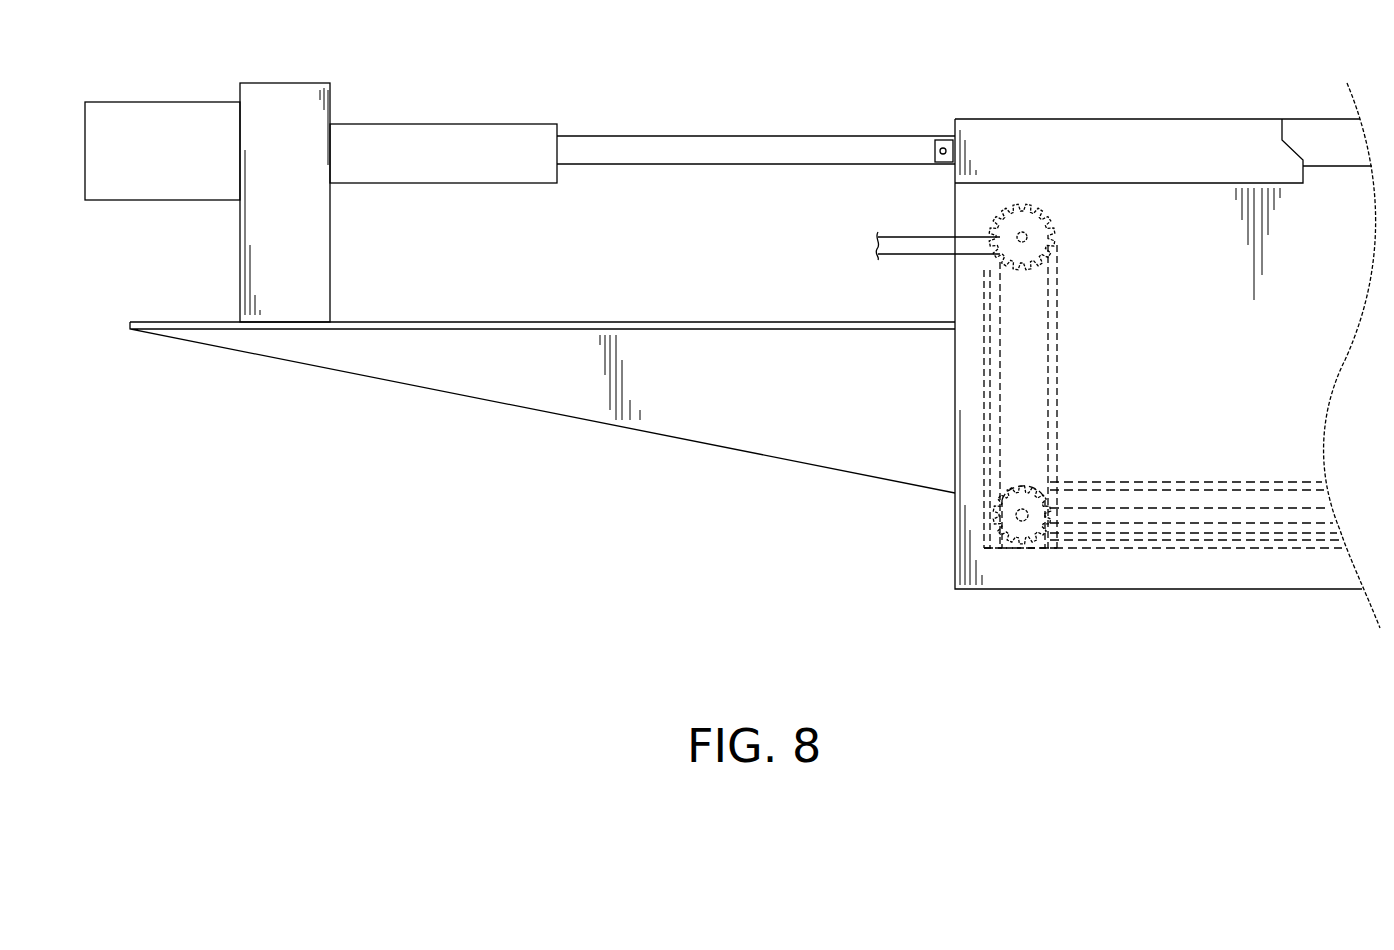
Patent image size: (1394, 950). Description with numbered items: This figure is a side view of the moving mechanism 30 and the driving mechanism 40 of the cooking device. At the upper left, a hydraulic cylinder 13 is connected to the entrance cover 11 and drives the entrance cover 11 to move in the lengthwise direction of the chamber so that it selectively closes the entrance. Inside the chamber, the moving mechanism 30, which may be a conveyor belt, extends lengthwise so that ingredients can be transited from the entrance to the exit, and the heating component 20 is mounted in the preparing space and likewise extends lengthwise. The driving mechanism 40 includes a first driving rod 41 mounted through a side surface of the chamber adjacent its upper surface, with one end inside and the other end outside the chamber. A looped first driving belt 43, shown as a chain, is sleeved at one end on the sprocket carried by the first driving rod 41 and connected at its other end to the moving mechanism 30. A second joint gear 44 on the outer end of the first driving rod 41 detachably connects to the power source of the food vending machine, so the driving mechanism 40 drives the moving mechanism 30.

The entrance cover 11 is at (1165, 124).
The hydraulic cylinder 13 is at (178, 116).
The heating component 20 is at (1112, 506).
The moving mechanism 30 is at (1222, 558).
The driving mechanism 40 is at (1063, 292).
The first driving rod 41 is at (1027, 233).
The first driving belt 43 is at (1052, 358).
The second joint gear 44 is at (1008, 252).